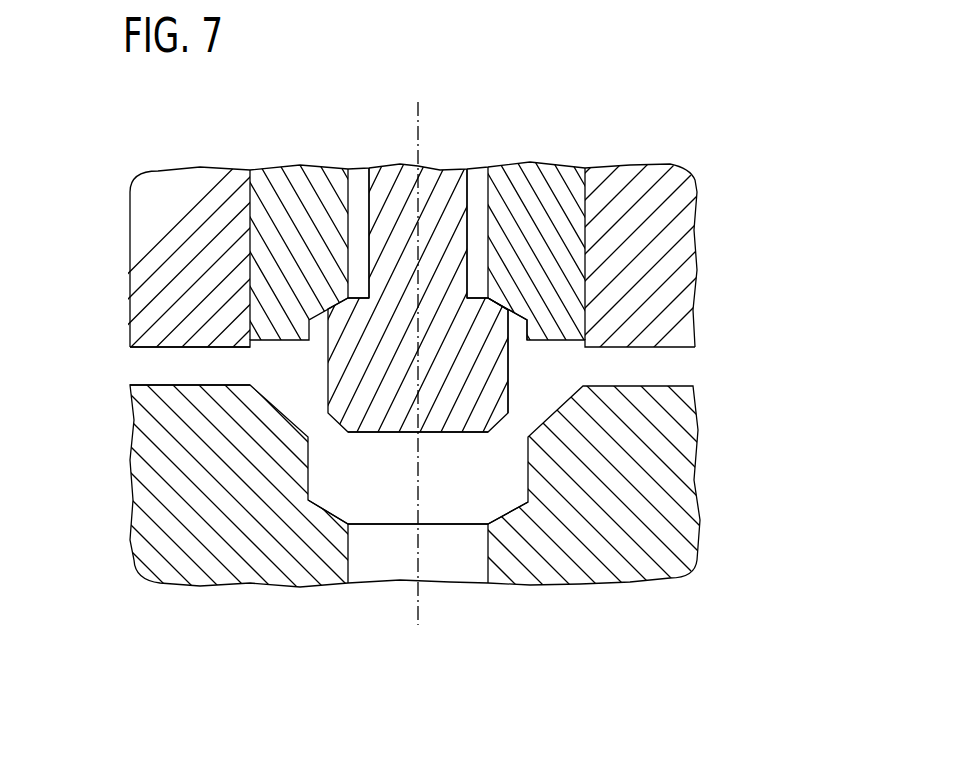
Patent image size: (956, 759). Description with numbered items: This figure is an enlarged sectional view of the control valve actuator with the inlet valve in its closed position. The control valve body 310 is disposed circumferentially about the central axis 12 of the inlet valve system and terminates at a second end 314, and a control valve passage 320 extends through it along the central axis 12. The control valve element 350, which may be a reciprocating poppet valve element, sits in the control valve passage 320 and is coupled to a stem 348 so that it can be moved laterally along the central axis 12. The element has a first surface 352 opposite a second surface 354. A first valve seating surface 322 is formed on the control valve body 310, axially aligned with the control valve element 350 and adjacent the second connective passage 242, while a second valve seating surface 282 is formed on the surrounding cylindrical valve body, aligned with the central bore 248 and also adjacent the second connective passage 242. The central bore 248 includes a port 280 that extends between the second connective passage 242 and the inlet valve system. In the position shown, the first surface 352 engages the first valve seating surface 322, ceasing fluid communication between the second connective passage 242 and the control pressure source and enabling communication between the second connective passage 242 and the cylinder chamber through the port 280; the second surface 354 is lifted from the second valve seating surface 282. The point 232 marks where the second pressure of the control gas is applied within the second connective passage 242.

The central axis 12 is at (418, 121).
The point 232 is at (293, 378).
The second connective passage 242 is at (145, 368).
The central bore 248 is at (277, 190).
The port 280 is at (382, 565).
The second valve seating surface 282 is at (330, 509).
The control valve body 310 is at (275, 265).
The second end 314 is at (553, 342).
The control valve passage 320 is at (358, 187).
The first valve seating surface 322 is at (508, 311).
The stem 348 is at (438, 187).
The control valve element 350 is at (350, 375).
The first surface 352 is at (497, 303).
The second surface 354 is at (452, 434).